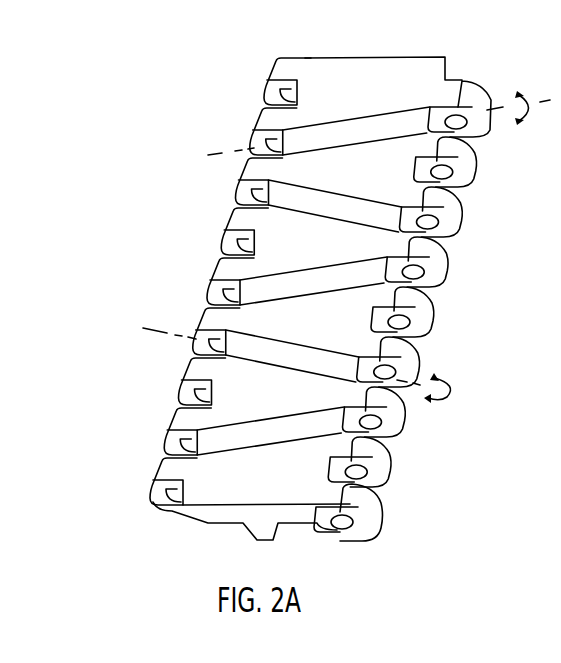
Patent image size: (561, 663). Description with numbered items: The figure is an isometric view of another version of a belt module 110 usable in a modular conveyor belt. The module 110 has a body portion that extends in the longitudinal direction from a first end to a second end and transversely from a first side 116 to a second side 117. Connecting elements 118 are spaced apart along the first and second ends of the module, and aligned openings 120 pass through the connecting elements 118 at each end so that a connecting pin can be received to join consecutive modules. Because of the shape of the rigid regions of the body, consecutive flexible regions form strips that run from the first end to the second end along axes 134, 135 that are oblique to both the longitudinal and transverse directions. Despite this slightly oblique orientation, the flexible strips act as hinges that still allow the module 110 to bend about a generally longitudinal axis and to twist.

The module 110 is at (325, 292).
The first side 116 is at (360, 57).
The second side 117 is at (200, 520).
The connecting elements 118 is at (213, 273).
The aligned openings 120 is at (346, 541).
The axis 134 is at (216, 152).
The axis 135 is at (152, 327).